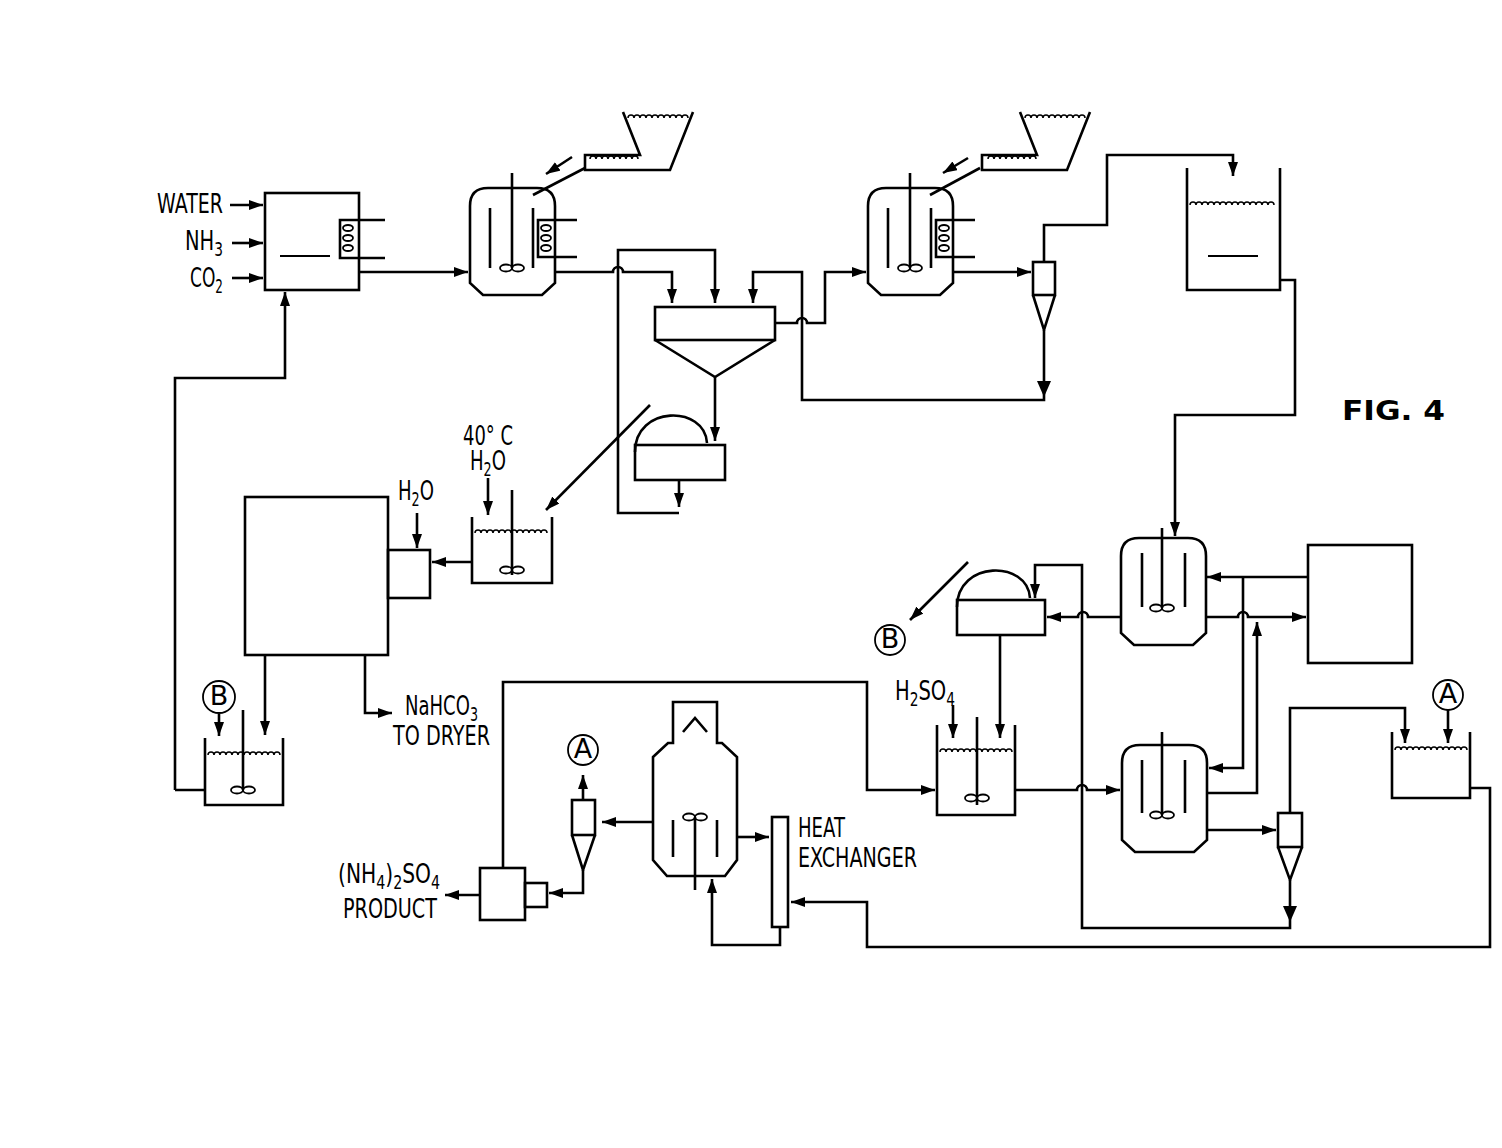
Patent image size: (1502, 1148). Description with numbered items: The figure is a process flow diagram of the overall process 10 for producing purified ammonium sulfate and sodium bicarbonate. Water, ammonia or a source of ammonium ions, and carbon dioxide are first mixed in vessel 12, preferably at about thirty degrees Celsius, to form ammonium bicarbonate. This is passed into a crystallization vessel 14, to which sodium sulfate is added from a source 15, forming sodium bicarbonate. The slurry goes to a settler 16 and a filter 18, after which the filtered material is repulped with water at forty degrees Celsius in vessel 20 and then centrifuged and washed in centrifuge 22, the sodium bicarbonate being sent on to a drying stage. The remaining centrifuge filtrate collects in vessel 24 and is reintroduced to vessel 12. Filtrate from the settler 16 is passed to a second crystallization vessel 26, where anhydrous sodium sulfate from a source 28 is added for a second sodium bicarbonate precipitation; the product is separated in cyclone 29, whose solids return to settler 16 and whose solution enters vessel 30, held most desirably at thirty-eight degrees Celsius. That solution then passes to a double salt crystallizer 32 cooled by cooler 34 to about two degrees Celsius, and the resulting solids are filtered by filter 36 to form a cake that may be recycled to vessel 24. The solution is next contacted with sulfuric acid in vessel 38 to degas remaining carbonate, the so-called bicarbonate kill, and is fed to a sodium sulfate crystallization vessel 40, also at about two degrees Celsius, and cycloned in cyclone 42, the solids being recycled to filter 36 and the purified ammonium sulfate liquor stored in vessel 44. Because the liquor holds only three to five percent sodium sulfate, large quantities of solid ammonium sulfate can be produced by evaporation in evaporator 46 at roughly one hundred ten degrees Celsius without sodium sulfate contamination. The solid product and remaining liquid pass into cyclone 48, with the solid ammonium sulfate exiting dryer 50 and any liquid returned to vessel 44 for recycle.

The overall process 10 is at (325, 147).
The vessel 12 is at (310, 291).
The crystallization vessel 14 is at (485, 190).
The source of sodium sulfate 15 is at (688, 130).
The settler 16 is at (743, 353).
The filter 18 is at (725, 455).
The repulp vessel 20 is at (552, 548).
The centrifuge 22 is at (338, 497).
The vessel 24 is at (283, 757).
The second crystallization vessel 26 is at (883, 190).
The source of anhydrous sodium sulfate 28 is at (1085, 130).
The cyclone 29 is at (1055, 272).
The vessel 30 is at (1280, 235).
The double salt crystallizer 32 is at (1195, 540).
The cooler 34 is at (1378, 545).
The filter 36 is at (993, 565).
The vessel 38 is at (1015, 797).
The sodium sulfate crystallization vessel 40 is at (1120, 778).
The cyclone 42 is at (1302, 822).
The vessel 44 is at (1390, 750).
The evaporator 46 is at (737, 752).
The cyclone 48 is at (590, 855).
The dryer 50 is at (492, 868).